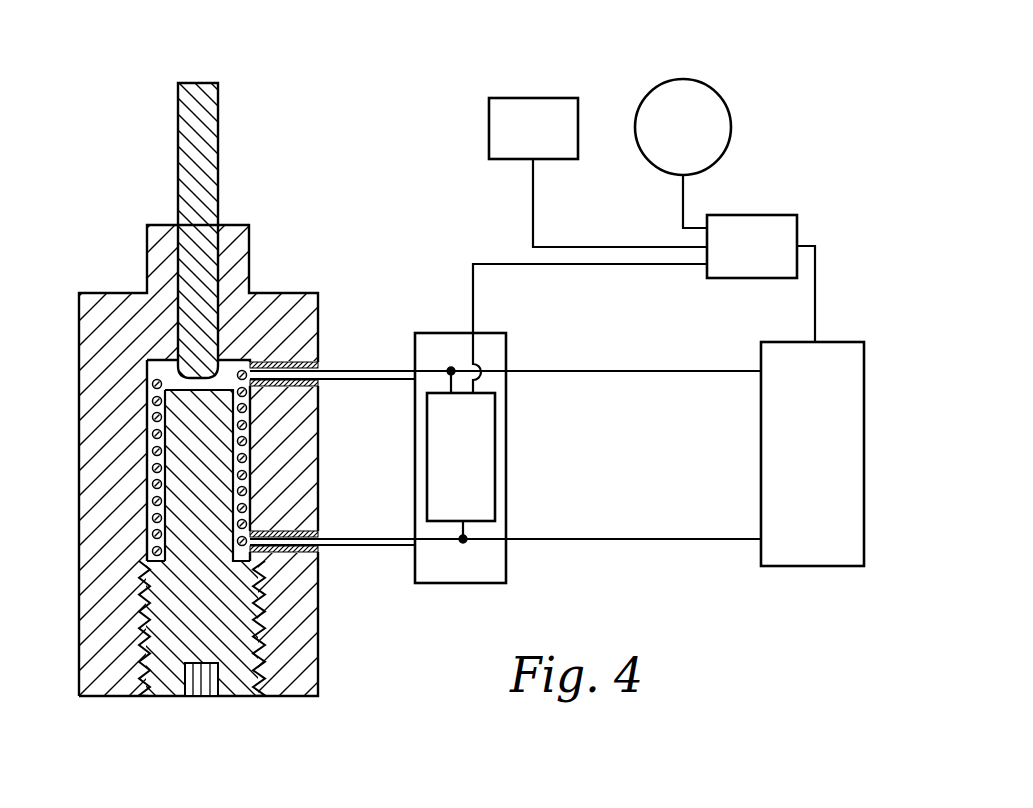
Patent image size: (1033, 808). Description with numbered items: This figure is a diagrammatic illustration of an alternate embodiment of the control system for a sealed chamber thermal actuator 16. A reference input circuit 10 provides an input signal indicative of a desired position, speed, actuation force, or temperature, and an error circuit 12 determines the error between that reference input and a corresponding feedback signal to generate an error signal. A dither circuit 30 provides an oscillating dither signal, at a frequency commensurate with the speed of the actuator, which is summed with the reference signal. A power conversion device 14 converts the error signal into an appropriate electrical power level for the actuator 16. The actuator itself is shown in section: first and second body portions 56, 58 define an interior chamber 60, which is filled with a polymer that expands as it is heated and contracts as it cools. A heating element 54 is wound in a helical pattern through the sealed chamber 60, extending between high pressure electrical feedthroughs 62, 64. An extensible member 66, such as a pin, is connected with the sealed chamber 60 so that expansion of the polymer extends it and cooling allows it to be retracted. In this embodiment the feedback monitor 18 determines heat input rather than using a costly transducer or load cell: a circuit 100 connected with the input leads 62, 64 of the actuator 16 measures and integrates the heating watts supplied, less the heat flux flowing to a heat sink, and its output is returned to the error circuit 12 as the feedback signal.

The reference input circuit 10 is at (533, 97).
The error circuit 12 is at (753, 215).
The power conversion device 14 is at (787, 342).
The sealed chamber thermal actuator 16 is at (282, 254).
The feedback monitor 18 is at (508, 430).
The dither circuit 30 is at (718, 95).
The heating element 54 is at (152, 505).
The first body portion 56 is at (297, 630).
The second body portion 58 is at (238, 680).
The interior chamber 60 is at (165, 368).
The high pressure electrical feedthrough 62 is at (362, 369).
The high pressure electrical feedthrough 64 is at (361, 547).
The extensible member 66 is at (208, 153).
The heat input integrating circuit 100 is at (496, 482).